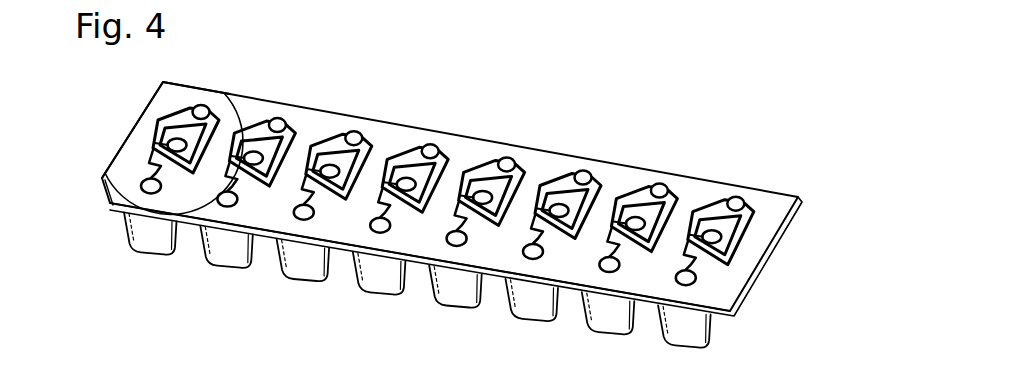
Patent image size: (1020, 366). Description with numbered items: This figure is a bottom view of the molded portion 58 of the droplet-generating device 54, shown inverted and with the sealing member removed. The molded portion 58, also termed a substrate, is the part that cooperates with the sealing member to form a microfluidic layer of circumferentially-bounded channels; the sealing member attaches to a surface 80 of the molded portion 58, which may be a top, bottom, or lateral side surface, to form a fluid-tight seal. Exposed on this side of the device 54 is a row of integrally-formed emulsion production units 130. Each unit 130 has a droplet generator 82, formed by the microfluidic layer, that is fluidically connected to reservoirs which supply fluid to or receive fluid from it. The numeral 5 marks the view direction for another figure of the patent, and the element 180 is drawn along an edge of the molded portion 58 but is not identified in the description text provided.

The droplet-generating device 54 is at (108, 99).
The molded portion 58 is at (153, 93).
The view direction for Fig. 5 is at (103, 180).
The surface 80 is at (276, 216).
The droplet generator 82 is at (318, 201).
The emulsion production unit 130 is at (223, 100).
The carrier plate 180 is at (743, 292).